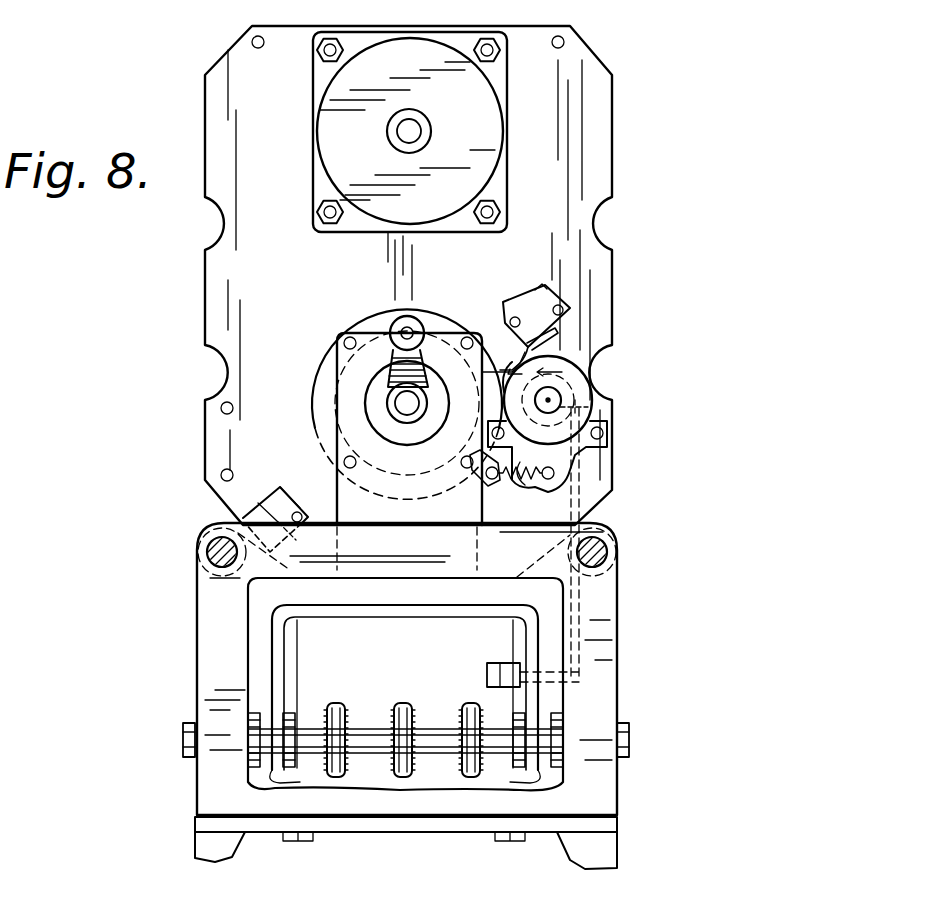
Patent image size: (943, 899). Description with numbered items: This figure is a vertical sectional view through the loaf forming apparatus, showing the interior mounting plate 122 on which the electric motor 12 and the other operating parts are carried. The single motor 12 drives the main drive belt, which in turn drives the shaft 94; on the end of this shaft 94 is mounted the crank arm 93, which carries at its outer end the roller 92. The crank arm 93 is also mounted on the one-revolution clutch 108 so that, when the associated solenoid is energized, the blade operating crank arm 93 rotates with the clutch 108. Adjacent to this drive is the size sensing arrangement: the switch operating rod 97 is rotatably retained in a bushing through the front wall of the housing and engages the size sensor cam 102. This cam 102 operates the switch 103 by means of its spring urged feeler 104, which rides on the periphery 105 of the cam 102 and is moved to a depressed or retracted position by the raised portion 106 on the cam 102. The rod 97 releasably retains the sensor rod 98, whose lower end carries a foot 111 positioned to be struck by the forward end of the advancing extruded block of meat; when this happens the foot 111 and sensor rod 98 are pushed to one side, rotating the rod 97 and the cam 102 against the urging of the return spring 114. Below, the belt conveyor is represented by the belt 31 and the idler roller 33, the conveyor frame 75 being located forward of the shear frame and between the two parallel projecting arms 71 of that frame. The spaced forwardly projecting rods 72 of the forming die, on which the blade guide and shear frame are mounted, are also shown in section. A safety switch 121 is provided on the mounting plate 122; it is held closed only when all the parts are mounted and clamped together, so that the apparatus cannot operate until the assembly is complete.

The electric motor 12 is at (470, 146).
The mounting plate 122 is at (582, 144).
The one-revolution clutch 108 is at (345, 413).
The shaft 94 is at (400, 412).
The crank arm 93 is at (386, 349).
The roller 92 is at (408, 318).
The periphery 105 is at (476, 376).
The switch 103 is at (538, 293).
The spring urged feeler 104 is at (560, 336).
The raised portion 106 is at (565, 353).
The switch operating rod 97 is at (550, 399).
The size sensor cam 102 is at (606, 403).
The return spring 114 is at (515, 481).
The sensor rod 98 is at (582, 613).
The projecting arms 71 is at (215, 642).
The forwardly projecting rods 72 is at (206, 550).
The safety switch 121 is at (262, 490).
The conveyor frame 75 is at (276, 648).
The foot 111 is at (500, 680).
The belt 31 is at (407, 706).
The idler roller 33 is at (305, 736).